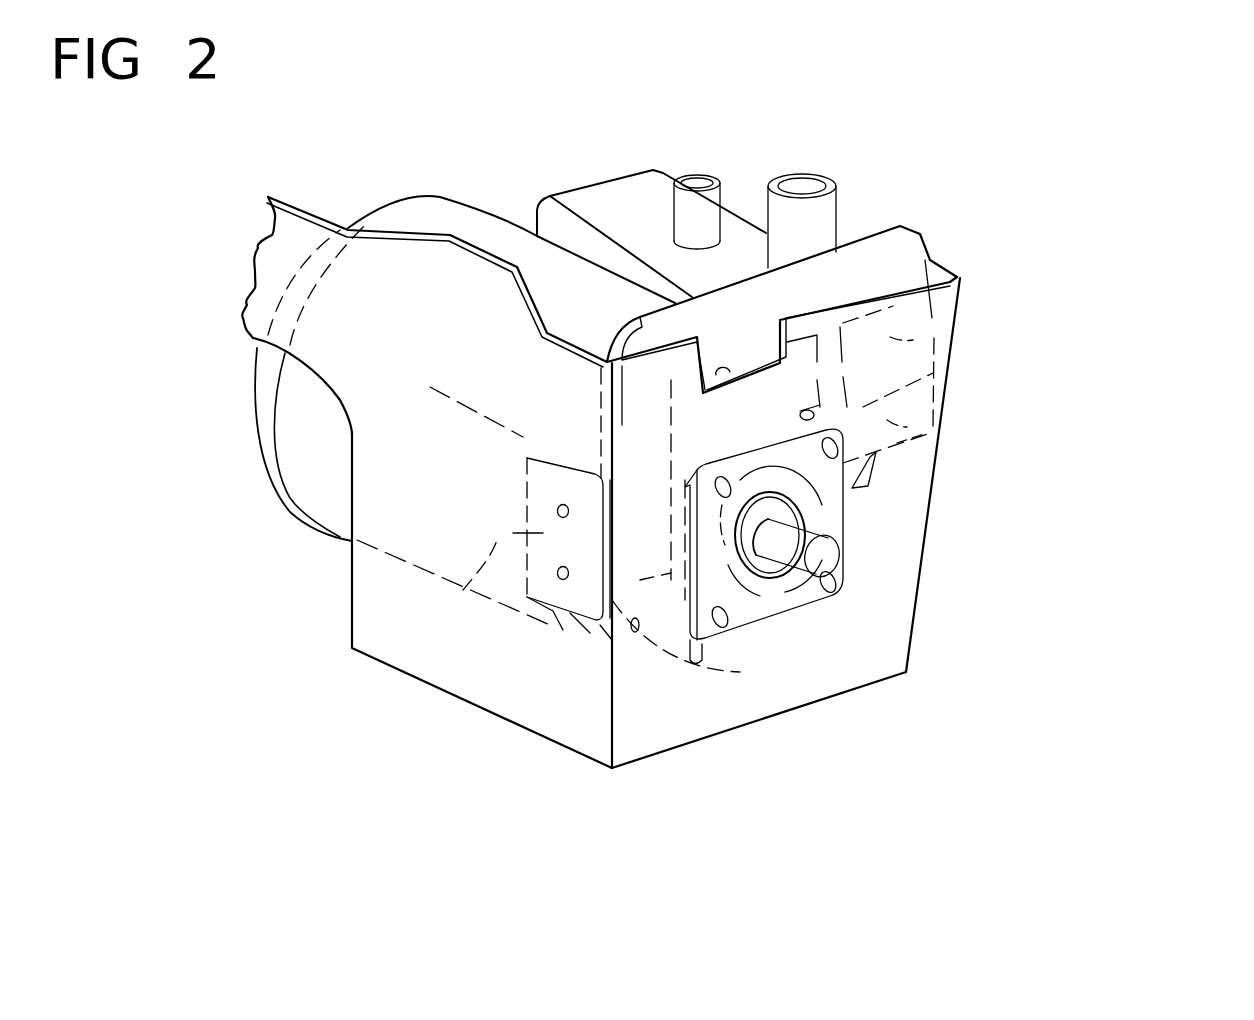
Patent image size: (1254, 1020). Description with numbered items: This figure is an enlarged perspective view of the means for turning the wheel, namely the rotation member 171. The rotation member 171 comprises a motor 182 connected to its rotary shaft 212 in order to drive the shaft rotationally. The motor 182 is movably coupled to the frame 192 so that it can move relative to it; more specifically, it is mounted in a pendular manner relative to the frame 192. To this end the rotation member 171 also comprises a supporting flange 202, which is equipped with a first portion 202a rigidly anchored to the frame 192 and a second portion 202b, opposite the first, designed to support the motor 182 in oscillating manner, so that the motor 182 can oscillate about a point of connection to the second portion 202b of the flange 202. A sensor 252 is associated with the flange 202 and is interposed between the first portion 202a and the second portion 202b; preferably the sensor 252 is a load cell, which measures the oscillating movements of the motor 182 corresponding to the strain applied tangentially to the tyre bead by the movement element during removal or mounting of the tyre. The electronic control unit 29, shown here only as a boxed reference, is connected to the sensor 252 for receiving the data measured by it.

The rotation member 171 is at (990, 496).
The motor 182 is at (487, 230).
The frame 192 is at (388, 585).
The supporting flange 202 is at (640, 307).
The first portion 202a is at (910, 251).
The second portion 202b is at (887, 422).
The rotary shaft 212 is at (828, 533).
The sensor 252 is at (932, 340).
The electronic control unit 29 is at (430, 387).